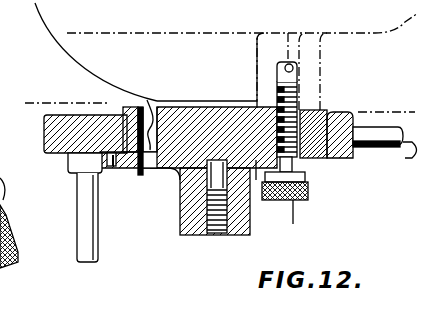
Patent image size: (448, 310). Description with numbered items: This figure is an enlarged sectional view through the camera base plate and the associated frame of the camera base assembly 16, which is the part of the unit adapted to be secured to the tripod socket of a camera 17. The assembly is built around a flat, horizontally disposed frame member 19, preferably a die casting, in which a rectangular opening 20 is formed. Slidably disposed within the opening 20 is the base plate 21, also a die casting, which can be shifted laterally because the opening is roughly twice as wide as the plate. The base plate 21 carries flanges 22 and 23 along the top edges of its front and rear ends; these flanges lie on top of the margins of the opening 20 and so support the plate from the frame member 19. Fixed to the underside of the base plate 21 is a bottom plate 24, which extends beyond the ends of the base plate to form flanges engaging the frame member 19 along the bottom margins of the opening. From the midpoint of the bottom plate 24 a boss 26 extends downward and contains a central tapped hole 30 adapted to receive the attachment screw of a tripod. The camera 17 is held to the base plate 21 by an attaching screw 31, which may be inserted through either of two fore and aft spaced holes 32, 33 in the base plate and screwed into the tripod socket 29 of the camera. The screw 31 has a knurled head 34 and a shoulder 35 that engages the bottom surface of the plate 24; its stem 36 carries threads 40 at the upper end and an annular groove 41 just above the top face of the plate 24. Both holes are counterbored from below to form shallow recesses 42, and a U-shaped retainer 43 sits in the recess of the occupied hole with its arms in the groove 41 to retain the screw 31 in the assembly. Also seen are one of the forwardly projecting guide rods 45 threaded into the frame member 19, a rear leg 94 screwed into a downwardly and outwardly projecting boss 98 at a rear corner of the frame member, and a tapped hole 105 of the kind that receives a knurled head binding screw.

The camera base assembly 16 is at (147, 100).
The camera 17 is at (64, 51).
The frame member 19 is at (50, 137).
The rectangular opening 20 is at (137, 168).
The base plate 21 is at (200, 118).
The flange 22 is at (320, 110).
The flange 23 is at (120, 107).
The bottom plate 24 is at (184, 172).
The boss 26 is at (190, 234).
The tripod socket 29 is at (289, 62).
The central tapped hole 30 is at (217, 236).
The attaching screw 31 is at (301, 223).
The hole 32 is at (313, 110).
The hole 33 is at (140, 108).
The knurled head 34 is at (312, 200).
The shoulder 35 is at (312, 177).
The stem 36 is at (333, 113).
The threads 40 is at (278, 84).
The annular groove 41 is at (360, 113).
The shallow recess 42 is at (148, 172).
The U-shaped retainer 43 is at (335, 163).
The guide rod 45 is at (412, 158).
The rear leg 94 is at (82, 196).
The boss 98 is at (80, 163).
The tapped hole 105 is at (16, 237).